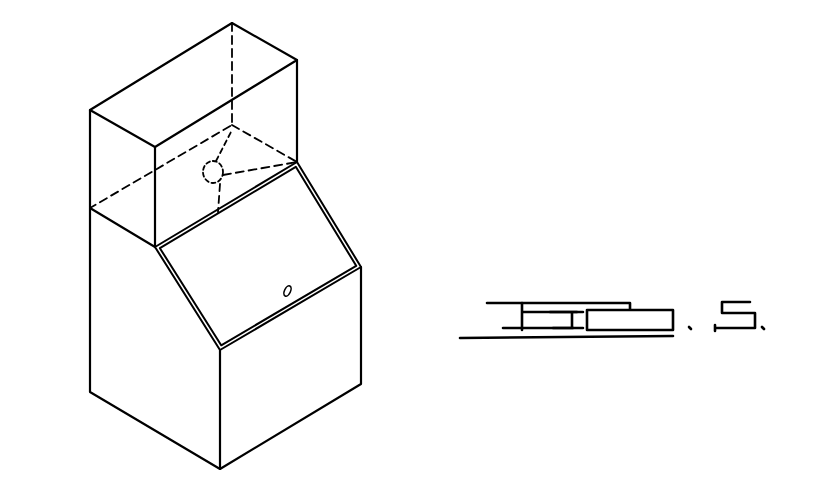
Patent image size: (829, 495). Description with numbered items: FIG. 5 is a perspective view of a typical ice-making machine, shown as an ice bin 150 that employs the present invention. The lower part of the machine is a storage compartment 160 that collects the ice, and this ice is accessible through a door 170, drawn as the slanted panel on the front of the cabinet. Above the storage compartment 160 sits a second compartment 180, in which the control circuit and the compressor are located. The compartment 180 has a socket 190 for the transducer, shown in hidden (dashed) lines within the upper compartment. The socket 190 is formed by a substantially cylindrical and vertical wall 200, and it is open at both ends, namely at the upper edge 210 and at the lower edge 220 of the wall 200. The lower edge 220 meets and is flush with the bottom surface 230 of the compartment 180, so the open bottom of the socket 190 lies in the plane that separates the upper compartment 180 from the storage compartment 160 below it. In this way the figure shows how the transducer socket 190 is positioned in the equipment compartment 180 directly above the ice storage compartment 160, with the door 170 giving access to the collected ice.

The ice bin 150 is at (440, 108).
The storage compartment 160 is at (363, 337).
The door 170 is at (320, 230).
The compartment 180 is at (300, 75).
The socket 190 is at (200, 168).
The wall 200 is at (303, 163).
The upper edge 210 is at (250, 133).
The lower edge 220 is at (218, 212).
The bottom surface 230 is at (127, 212).